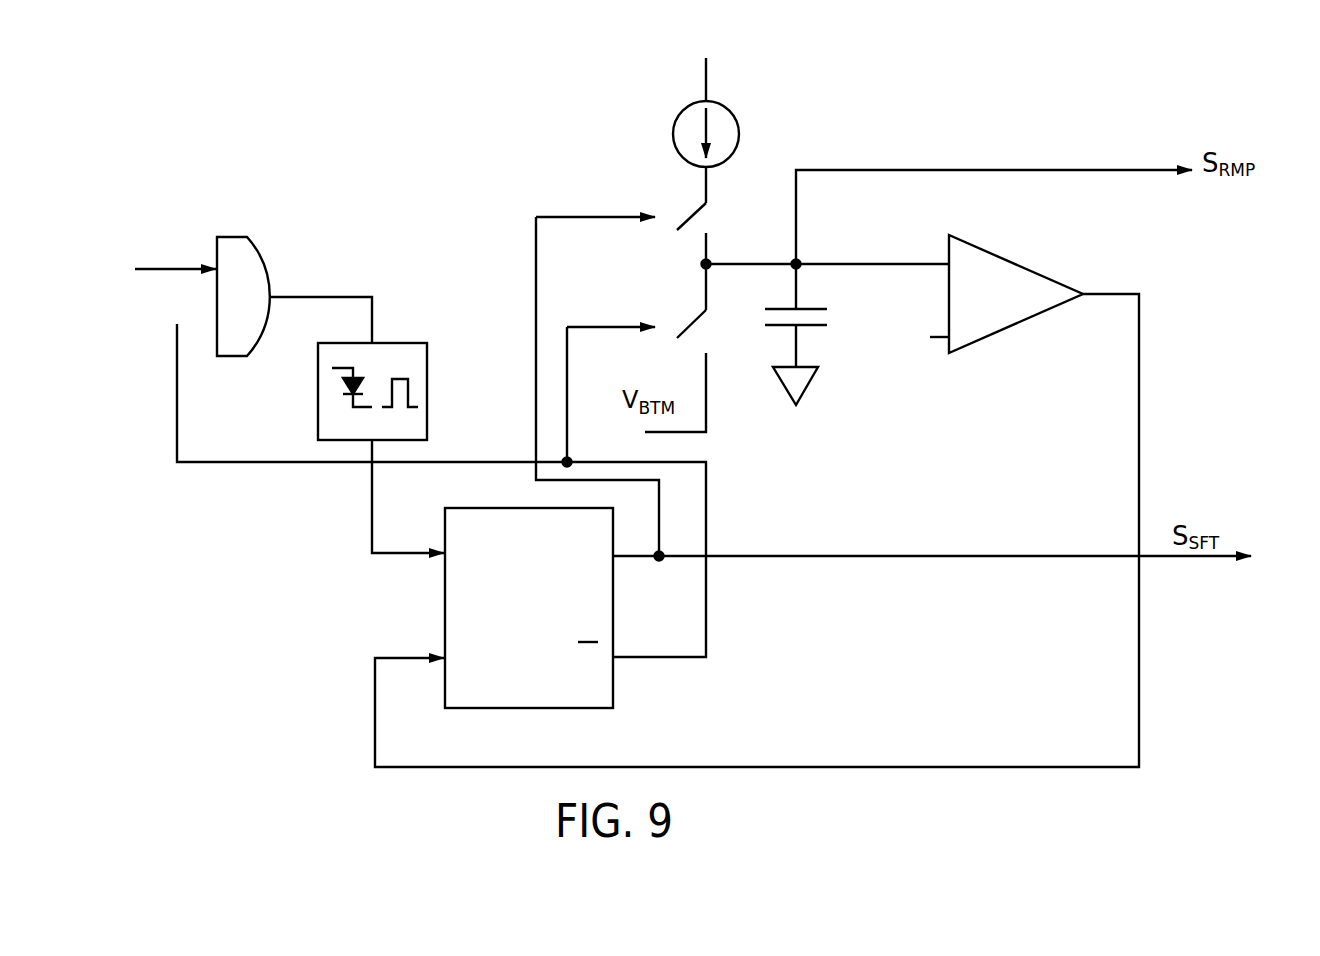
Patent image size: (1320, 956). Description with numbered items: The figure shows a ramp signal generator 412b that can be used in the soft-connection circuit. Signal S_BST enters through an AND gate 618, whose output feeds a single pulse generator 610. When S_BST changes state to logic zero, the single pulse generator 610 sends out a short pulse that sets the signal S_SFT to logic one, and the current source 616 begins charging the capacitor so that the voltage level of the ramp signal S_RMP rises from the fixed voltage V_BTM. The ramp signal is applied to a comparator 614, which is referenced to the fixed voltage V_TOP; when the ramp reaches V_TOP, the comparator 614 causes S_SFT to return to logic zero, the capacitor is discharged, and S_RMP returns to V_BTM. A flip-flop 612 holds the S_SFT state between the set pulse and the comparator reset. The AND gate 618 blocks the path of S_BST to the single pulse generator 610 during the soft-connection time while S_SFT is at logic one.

The ramp signal generator 412b is at (1138, 112).
The single pulse generator 610 is at (383, 343).
The SR flip-flop 612 is at (445, 627).
The comparator 614 is at (1016, 263).
The current source 616 is at (738, 137).
The AND gate 618 is at (253, 237).